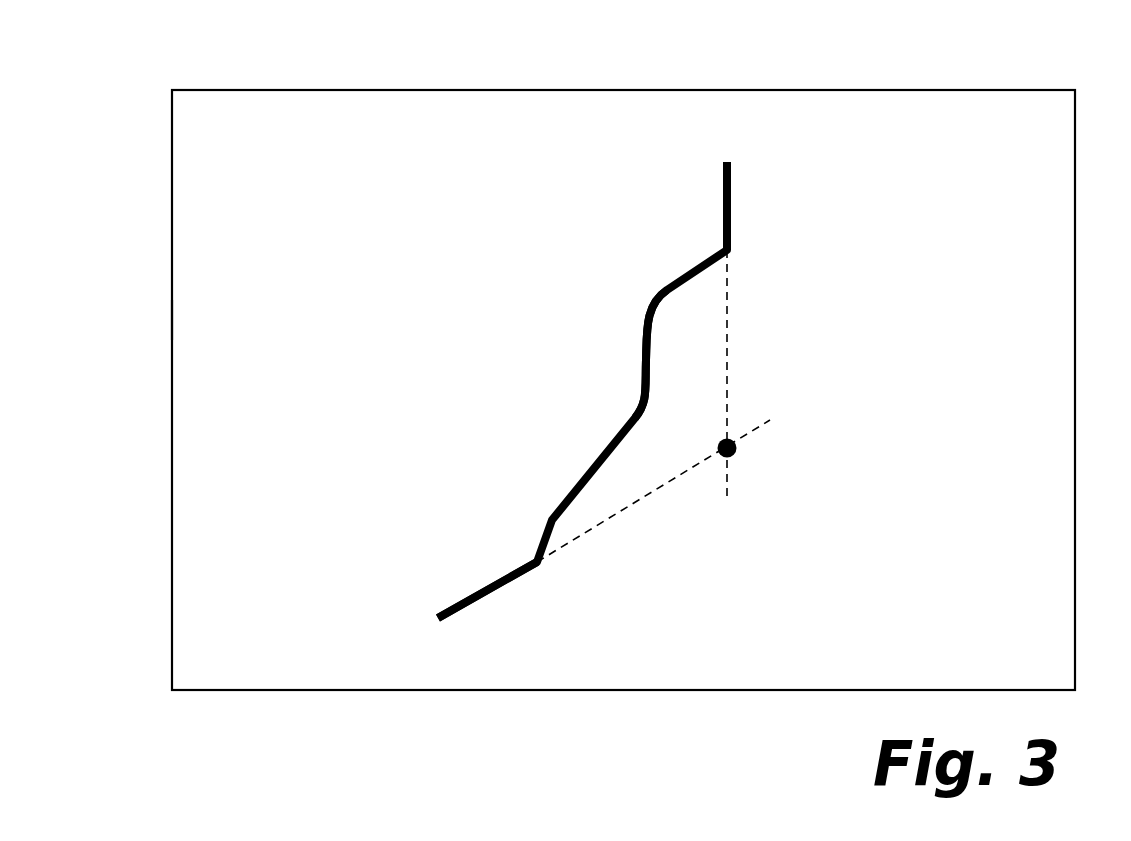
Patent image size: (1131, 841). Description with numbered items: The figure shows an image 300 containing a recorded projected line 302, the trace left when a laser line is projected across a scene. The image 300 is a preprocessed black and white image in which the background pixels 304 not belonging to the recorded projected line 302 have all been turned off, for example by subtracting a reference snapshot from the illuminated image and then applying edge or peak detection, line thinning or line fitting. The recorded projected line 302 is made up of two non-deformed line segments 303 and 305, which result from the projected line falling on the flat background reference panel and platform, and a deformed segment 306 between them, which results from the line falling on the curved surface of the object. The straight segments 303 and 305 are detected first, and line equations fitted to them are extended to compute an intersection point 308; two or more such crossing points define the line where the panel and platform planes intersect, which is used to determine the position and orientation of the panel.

The image 300 is at (262, 90).
The recorded projected line 302 is at (728, 155).
The non-deformed line segment 303 is at (750, 162).
The background pixels 304 is at (200, 322).
The non-deformed line segment 305 is at (500, 612).
The deformed segments 306 is at (617, 410).
The intersection point 308 is at (738, 446).